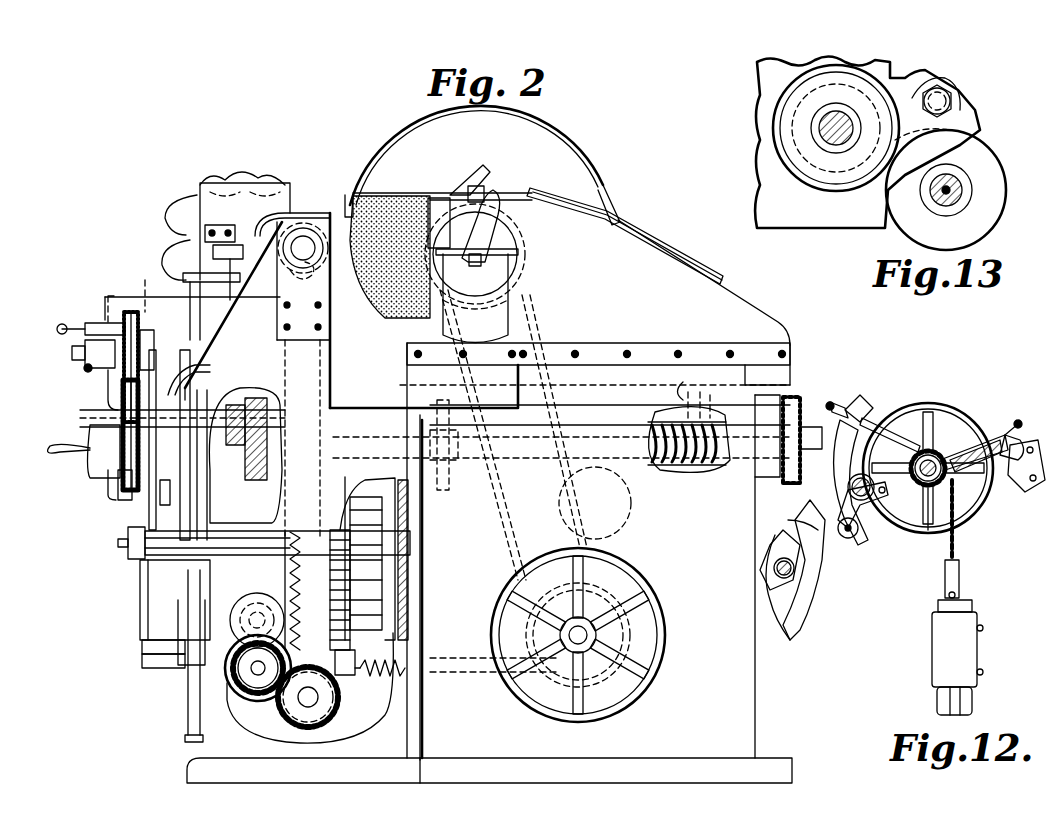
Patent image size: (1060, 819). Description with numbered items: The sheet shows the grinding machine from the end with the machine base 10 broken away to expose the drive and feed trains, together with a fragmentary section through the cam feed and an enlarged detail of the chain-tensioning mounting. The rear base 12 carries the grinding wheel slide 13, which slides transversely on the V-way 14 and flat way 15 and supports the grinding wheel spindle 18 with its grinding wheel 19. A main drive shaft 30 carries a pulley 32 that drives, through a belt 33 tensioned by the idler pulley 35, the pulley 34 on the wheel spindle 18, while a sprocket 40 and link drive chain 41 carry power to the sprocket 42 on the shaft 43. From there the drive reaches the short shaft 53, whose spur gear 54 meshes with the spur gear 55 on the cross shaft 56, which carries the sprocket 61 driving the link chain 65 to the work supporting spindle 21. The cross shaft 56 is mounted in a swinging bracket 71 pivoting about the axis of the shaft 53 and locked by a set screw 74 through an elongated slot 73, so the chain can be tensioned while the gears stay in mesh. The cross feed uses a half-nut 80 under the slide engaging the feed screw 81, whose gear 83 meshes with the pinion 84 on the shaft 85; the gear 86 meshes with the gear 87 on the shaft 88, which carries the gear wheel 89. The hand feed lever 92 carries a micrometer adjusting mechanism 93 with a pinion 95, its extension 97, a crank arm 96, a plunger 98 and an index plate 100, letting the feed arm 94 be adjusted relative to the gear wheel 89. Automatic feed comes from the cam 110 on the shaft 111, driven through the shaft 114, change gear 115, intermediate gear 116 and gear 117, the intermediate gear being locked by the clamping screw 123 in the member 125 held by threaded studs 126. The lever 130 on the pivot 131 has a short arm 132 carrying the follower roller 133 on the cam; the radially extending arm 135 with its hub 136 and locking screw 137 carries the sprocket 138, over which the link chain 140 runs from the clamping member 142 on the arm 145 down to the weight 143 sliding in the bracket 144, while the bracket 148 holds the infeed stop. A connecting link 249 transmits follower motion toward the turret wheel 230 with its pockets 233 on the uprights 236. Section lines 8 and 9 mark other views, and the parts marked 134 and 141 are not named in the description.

In FIG. 2, the section line 8 is at (145, 382).
In FIG. 2, the section line 9 is at (119, 403).
In FIG. 2, the machine base 10 is at (192, 770).
In FIG. 2, the rear base 12 is at (757, 716).
In FIG. 2, the grinding wheel slide 13 is at (727, 300).
In FIG. 2, the V-way 14 is at (784, 380).
In FIG. 2, the flat way 15 is at (745, 360).
In FIG. 2, the grinding wheel spindle 18 is at (466, 248).
In FIG. 2, the grinding wheel 19 is at (372, 205).
In FIG. 2, the work supporting spindle 21 is at (306, 246).
In FIG. 2, the main drive shaft 30 is at (590, 636).
In FIG. 2, the pulley 32 is at (668, 667).
In FIG. 2, the belt 33 is at (498, 500).
In FIG. 2, the pulley 34 is at (512, 280).
In FIG. 2, the idler belt tensioning pulley 35 is at (631, 503).
In FIG. 2, the sprocket 40 is at (596, 660).
In FIG. 2, the link drive chain 41 is at (480, 672).
In FIG. 2, the sprocket 42 is at (240, 600).
In FIG. 2, the shaft 43 is at (255, 621).
In FIG. 13, the short shaft 53 is at (822, 128).
In FIG. 2, the spur gear 54 is at (235, 698).
In FIG. 2, the spur gear 55 is at (292, 712).
In FIG. 13, the cross shaft 56 is at (955, 200).
In FIG. 2, the sprocket 61 is at (318, 702).
In FIG. 2, the link chain 65 is at (286, 360).
In FIG. 2, the swinging bracket 71 is at (240, 686).
In FIG. 13, the swinging bracket 71 is at (962, 128).
In FIG. 13, the elongated slot 73 is at (930, 75).
In FIG. 13, the set screw 74 is at (950, 95).
In FIG. 2, the half-nut 80 is at (689, 420).
In FIG. 2, the feed screw 81 is at (706, 452).
In FIG. 2, the gear 83 is at (438, 418).
In FIG. 2, the pinion 84 is at (445, 445).
In FIG. 2, the shaft 85 is at (338, 445).
In FIG. 2, the gear 86 is at (258, 478).
In FIG. 2, the gear 87 is at (256, 402).
In FIG. 2, the shaft 88 is at (205, 420).
In FIG. 12, the shaft 88 is at (926, 500).
In FIG. 2, the gear wheel 89 is at (126, 492).
In FIG. 12, the gear wheel 89 is at (975, 515).
In FIG. 2, the hand feed lever 92 is at (108, 445).
In FIG. 2, the micrometer adjusting mechanism 93 is at (93, 326).
In FIG. 2, the feed arm 94 is at (108, 395).
In FIG. 2, the pinion 95 is at (147, 365).
In FIG. 2, the crank arm 96 is at (110, 326).
In FIG. 2, the extension 97 is at (72, 352).
In FIG. 2, the plunger 98 is at (60, 328).
In FIG. 2, the index plate 100 is at (86, 368).
In FIG. 2, the cam 110 is at (205, 590).
In FIG. 12, the cam 110 is at (825, 618).
In FIG. 12, the shaft 111 is at (783, 578).
In FIG. 2, the shaft 114 is at (360, 660).
In FIG. 2, the gear 115 is at (352, 678).
In FIG. 2, the intermediate gear 116 is at (352, 630).
In FIG. 2, the gear 117 is at (322, 538).
In FIG. 2, the clamping screw 123 is at (355, 492).
In FIG. 2, the member 125 is at (384, 530).
In FIG. 2, the threaded studs 126 is at (410, 570).
In FIG. 2, the lever 130 is at (105, 412).
In FIG. 12, the lever 130 is at (862, 540).
In FIG. 12, the pivot 131 is at (850, 482).
In FIG. 12, the short arm 132 is at (862, 510).
In FIG. 2, the follower roller 133 is at (186, 499).
In FIG. 12, the follower roller 133 is at (850, 540).
In FIG. 2, the shaft 134 is at (118, 543).
In FIG. 2, the radially extending arm 135 is at (153, 372).
In FIG. 12, the radially extending arm 135 is at (962, 455).
In FIG. 2, the projecting hub 136 is at (122, 490).
In FIG. 2, the locking screw 137 is at (130, 315).
In FIG. 12, the locking screw 137 is at (1020, 422).
In FIG. 12, the sprocket 138 is at (925, 450).
In FIG. 12, the link chain 140 is at (958, 550).
In FIG. 12, the weight 141 is at (933, 650).
In FIG. 12, the slidable clamping member 142 is at (855, 405).
In FIG. 2, the weight 143 is at (144, 666).
In FIG. 12, the weight 143 is at (937, 700).
In FIG. 2, the housing or bracket 144 is at (142, 643).
In FIG. 12, the arm 145 is at (870, 410).
In FIG. 12, the bracket 148 is at (1020, 488).
In FIG. 2, the turret wheel 230 is at (175, 216).
In FIG. 2, the pockets 233 is at (198, 195).
In FIG. 2, the uprights 236 is at (222, 200).
In FIG. 2, the connecting link 249 is at (195, 372).